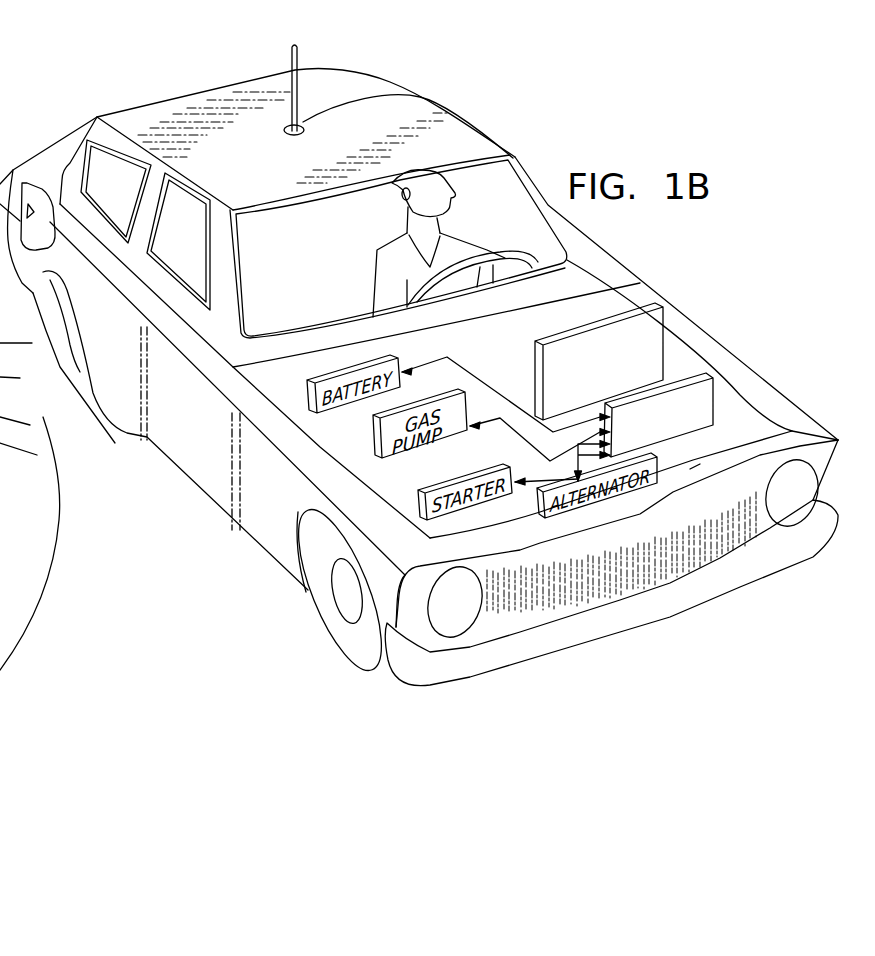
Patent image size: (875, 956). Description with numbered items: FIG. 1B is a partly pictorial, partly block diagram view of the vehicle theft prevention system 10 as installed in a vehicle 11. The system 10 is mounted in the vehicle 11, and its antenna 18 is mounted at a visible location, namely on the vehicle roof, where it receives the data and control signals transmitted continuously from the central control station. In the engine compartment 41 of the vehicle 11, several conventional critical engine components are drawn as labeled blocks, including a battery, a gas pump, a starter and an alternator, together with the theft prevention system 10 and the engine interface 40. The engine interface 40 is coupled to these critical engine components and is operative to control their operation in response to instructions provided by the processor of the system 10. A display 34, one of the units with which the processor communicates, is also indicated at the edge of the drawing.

The antenna 18 is at (290, 53).
The vehicle theft prevention system 10 is at (658, 305).
The engine interface 40 is at (712, 372).
The engine compartment 41 is at (693, 467).
The vehicle 11 is at (233, 553).
The display 34 is at (0, 497).